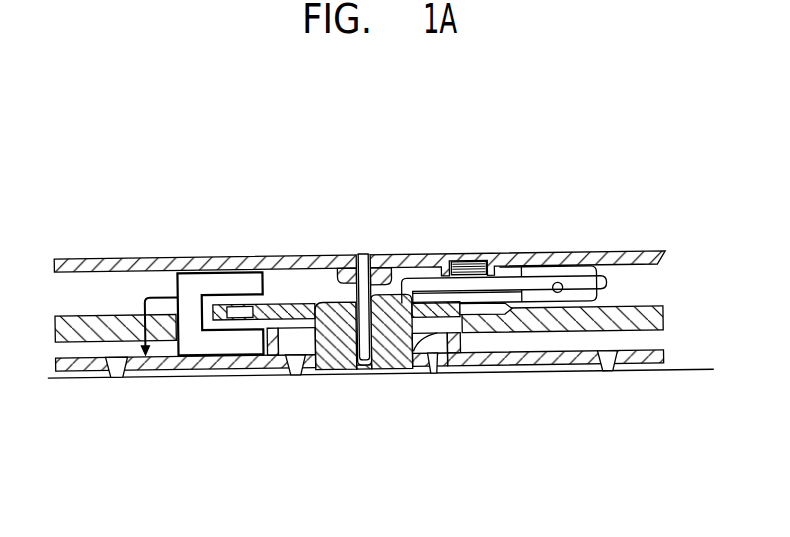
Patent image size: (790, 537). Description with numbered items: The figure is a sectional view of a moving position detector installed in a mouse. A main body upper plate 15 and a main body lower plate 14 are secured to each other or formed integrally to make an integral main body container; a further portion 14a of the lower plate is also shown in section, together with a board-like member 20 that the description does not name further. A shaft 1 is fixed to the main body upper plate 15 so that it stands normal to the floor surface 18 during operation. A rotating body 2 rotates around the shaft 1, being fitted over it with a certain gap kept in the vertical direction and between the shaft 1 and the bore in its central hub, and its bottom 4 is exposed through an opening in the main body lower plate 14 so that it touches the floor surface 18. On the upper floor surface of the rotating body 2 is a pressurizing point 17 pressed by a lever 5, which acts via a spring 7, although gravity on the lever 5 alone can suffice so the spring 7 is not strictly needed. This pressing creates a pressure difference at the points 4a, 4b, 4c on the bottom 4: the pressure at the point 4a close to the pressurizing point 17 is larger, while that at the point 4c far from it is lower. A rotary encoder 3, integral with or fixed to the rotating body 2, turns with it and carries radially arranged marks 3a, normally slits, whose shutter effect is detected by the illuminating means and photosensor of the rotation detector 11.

The shaft 1 is at (361, 257).
The rotating body 2 is at (457, 377).
The rotary encoder 3 is at (297, 258).
The marks 3a is at (231, 258).
The bottom of the rotating body 4 is at (342, 369).
The point close to the pressurizing point 4a is at (398, 375).
The point on the bottom of the rotating body 4b is at (360, 375).
The point far from the pressurizing point 4c is at (328, 375).
The lever 5 is at (421, 256).
The spring 7 is at (463, 255).
The rotation detector 11 is at (207, 257).
The main body lower plate 14 is at (538, 372).
The portion of bottom plate 14a is at (418, 374).
The main body upper plate 15 is at (626, 253).
The pressurizing point 17 is at (401, 256).
The floor surface 18 is at (700, 367).
The circuit board 20 is at (117, 315).